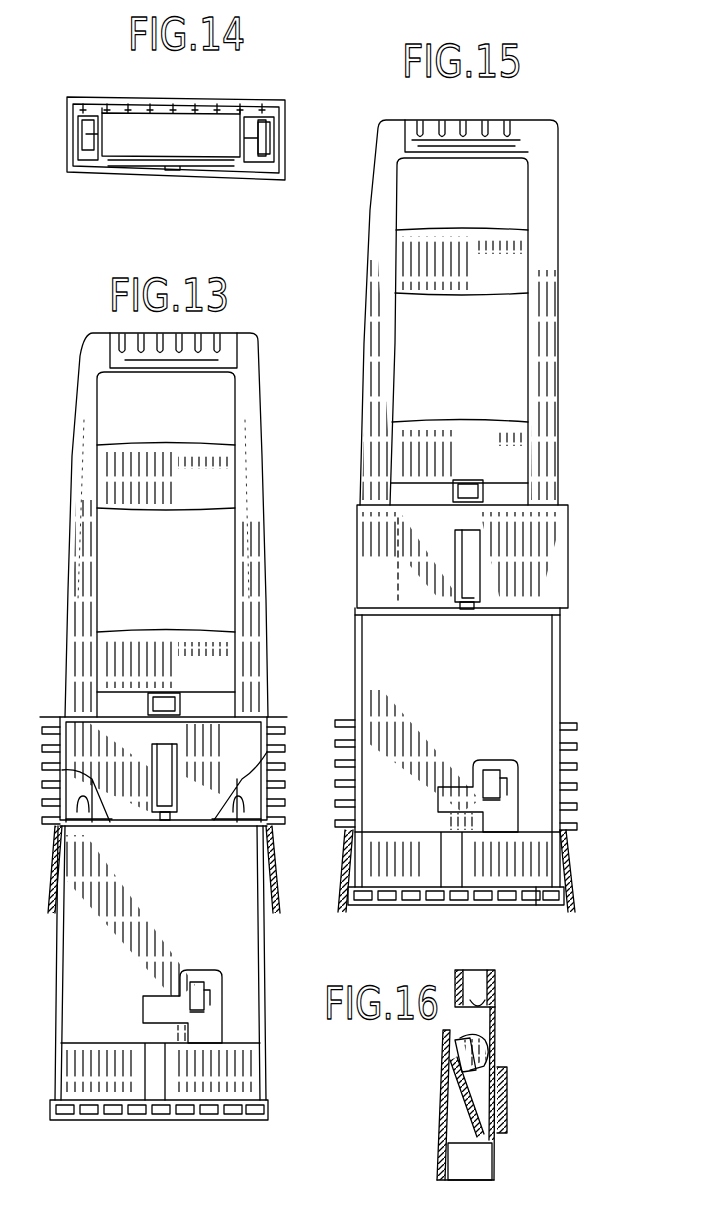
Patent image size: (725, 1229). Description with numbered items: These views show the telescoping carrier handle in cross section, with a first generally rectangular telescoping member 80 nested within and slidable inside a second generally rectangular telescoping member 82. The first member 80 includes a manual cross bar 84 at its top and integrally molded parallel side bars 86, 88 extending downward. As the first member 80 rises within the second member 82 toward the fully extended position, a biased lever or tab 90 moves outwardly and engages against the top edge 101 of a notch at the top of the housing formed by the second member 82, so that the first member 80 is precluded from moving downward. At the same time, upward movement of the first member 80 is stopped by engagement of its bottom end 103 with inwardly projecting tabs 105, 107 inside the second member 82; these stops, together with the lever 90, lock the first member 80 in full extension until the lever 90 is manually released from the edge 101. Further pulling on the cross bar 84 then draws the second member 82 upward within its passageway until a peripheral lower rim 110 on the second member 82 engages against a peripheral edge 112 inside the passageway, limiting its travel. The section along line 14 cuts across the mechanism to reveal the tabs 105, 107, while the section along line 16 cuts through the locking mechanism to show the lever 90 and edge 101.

In FIG. 13, the first telescoping member 80 is at (67, 668).
In FIG. 15, the first telescoping member 80 is at (366, 333).
In FIG. 13, the second telescoping member 82 is at (86, 718).
In FIG. 15, the second telescoping member 82 is at (540, 540).
In FIG. 15, the manual cross bar 84 is at (478, 123).
In FIG. 13, the side bar 86 is at (70, 545).
In FIG. 13, the side bar 88 is at (264, 521).
In FIG. 16, the lever or tab 90 is at (446, 1046).
In FIG. 16, the top edge 101 is at (440, 1062).
In FIG. 13, the bottom end 103 is at (98, 822).
In FIG. 14, the inwardly projecting tab 105 is at (273, 128).
In FIG. 14, the inwardly projecting tab 107 is at (70, 143).
In FIG. 15, the peripheral lower rim 110 is at (374, 889).
In FIG. 15, the peripheral edge 112 is at (540, 887).
In FIG. 13, the section line 14— 14 is at (30, 775).
In FIG. 15, the section line 16— 16 is at (455, 448).